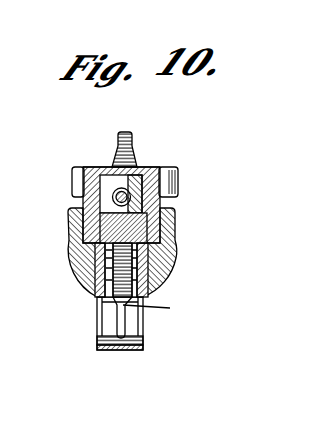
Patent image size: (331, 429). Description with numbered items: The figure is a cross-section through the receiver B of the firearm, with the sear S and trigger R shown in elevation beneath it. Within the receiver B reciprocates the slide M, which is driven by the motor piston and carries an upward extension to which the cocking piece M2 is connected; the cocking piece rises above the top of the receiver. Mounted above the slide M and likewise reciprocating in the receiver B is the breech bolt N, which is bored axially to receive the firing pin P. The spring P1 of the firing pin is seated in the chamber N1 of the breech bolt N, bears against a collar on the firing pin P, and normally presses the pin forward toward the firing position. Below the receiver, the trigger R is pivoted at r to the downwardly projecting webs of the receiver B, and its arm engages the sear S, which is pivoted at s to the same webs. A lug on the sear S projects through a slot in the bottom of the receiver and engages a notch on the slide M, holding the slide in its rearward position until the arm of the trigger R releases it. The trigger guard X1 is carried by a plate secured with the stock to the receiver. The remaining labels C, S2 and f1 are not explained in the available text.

The chamber N1 is at (103, 170).
The cocking piece M2 is at (131, 143).
The firing pin P is at (140, 173).
The receiver B is at (170, 198).
The firing pin spring P1 is at (107, 192).
The breech bolt N is at (100, 210).
The slide M is at (103, 235).
The sear pivot s is at (88, 266).
The sear S is at (92, 281).
The trigger pivot r is at (118, 303).
The trigger R is at (122, 322).
The bolt C is at (140, 238).
The sleeve wall S2 is at (174, 267).
The flange line f1 is at (160, 306).
The trigger guard X1 is at (137, 347).